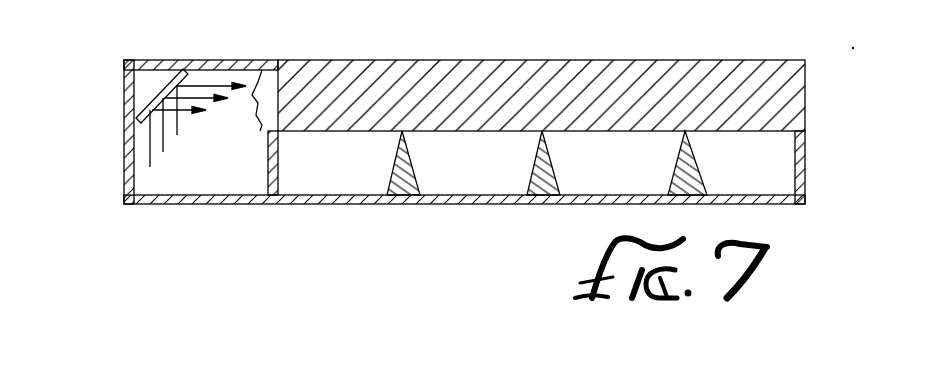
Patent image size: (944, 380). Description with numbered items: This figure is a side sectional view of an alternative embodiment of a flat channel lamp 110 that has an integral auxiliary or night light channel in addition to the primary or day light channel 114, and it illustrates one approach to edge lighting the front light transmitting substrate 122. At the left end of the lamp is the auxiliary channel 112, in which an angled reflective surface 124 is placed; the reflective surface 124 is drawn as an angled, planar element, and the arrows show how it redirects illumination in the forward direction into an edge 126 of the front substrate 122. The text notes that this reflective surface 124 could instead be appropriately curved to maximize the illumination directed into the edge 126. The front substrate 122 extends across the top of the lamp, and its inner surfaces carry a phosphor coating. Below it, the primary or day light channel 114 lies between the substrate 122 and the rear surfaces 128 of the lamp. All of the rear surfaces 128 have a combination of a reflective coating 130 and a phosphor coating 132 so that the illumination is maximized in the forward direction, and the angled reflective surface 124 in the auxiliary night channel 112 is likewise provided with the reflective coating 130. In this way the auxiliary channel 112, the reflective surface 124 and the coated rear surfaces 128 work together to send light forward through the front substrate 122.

The backlight assembly 110 is at (456, 128).
The auxiliary channel 112 is at (456, 137).
The light guide cavity 114 is at (536, 193).
The front light transmitting substrate 122 is at (570, 59).
The reflective surface 124 is at (150, 92).
The edge 126 is at (264, 81).
The rear surfaces 128 is at (495, 198).
The reflective coating 130 is at (137, 121).
The phosphor coating 132 is at (800, 185).